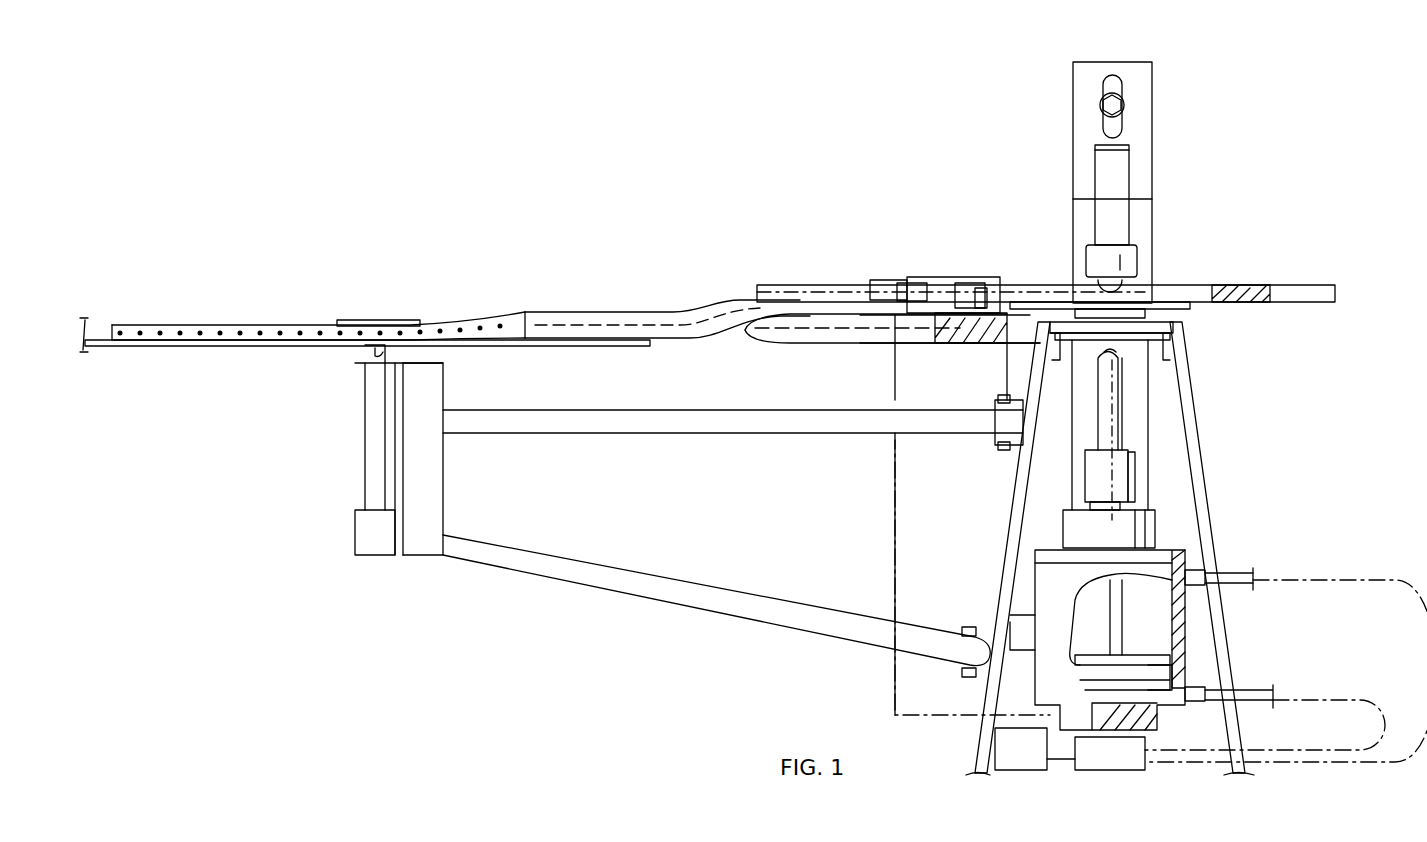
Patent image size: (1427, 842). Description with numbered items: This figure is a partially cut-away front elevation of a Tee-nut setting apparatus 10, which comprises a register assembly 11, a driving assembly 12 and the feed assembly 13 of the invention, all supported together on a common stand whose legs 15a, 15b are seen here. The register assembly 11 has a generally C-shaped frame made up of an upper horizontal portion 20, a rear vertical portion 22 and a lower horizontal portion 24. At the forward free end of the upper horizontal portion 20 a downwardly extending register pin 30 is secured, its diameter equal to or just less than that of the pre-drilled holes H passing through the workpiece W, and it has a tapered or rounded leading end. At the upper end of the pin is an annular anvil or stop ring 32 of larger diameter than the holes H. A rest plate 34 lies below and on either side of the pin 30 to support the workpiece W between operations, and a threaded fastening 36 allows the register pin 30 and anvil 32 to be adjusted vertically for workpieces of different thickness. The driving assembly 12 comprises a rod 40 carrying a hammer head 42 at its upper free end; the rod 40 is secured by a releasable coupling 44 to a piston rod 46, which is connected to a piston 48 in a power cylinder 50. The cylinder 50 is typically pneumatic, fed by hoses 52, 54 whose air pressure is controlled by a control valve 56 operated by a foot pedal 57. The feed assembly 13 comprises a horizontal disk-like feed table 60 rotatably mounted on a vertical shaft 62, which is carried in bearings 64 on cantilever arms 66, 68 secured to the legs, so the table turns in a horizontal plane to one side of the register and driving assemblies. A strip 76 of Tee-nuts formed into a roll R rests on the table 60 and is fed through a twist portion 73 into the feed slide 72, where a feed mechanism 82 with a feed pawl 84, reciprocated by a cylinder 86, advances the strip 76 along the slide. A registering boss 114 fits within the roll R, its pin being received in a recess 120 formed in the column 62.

The Tee-nut setting apparatus 10 is at (1248, 322).
The register assembly 11 is at (1168, 207).
The driving assembly 12 is at (1152, 430).
The feed assembly 13 is at (500, 215).
The leg 15a is at (1018, 510).
The leg 15b is at (1205, 545).
The upper horizontal portion 20 is at (1152, 130).
The rear vertical portion 22 is at (1073, 268).
The lower horizontal portion 24 is at (1150, 562).
The register pin 30 is at (1137, 297).
The anvil 32 is at (1087, 260).
The rest plate 34 is at (1185, 306).
The threaded fastening 36 is at (1125, 105).
The rod 40 is at (1100, 400).
The hammer head 42 is at (1120, 353).
The releasable coupling 44 is at (1130, 490).
The piston rod 46 is at (1115, 635).
The piston 48 is at (1160, 667).
The power cylinder 50 is at (1190, 580).
The hose 52 is at (1250, 705).
The hose 54 is at (1253, 568).
The control valve 56 is at (1130, 760).
The foot pedal 57 is at (1017, 757).
The feed table 60 is at (195, 346).
The shaft 62 is at (372, 465).
The bearings 64 is at (362, 365).
The cantilever arm 66 is at (640, 425).
The cantilever arm 68 is at (655, 582).
The feed slide 72 is at (797, 284).
The twist portion 73 is at (720, 260).
The strip 76 is at (283, 320).
The feed mechanism 82 is at (918, 245).
The feed pawl 84 is at (990, 285).
The cylinder 86 is at (897, 288).
The registering boss 114 is at (410, 300).
The recess 120 is at (405, 346).
The pre-drilled hole H is at (1245, 280).
The roll R is at (202, 310).
The workpiece W is at (1295, 287).